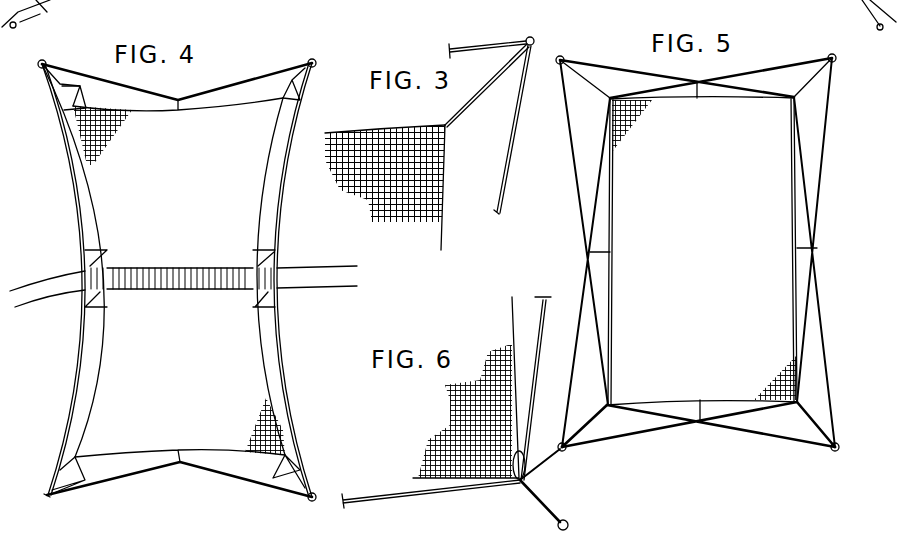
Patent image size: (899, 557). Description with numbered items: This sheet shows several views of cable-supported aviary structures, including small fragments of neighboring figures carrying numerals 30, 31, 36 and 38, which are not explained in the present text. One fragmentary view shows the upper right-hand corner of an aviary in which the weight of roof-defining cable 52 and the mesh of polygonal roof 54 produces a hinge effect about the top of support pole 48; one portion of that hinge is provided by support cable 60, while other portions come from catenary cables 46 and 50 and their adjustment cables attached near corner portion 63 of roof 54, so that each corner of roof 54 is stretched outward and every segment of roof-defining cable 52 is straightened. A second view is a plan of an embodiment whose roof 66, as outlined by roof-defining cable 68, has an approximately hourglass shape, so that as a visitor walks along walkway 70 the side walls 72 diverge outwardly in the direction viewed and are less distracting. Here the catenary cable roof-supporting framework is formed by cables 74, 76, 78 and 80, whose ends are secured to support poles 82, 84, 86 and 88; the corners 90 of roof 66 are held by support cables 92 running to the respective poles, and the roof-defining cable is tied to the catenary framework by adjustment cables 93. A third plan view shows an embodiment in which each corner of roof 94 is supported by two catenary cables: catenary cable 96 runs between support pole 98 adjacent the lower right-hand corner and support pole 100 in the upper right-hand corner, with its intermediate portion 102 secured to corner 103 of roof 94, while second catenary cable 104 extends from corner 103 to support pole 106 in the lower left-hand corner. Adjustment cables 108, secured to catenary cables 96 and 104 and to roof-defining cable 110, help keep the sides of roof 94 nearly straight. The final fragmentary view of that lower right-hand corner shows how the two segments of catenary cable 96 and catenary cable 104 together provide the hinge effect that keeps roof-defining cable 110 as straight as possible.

In FIG. 4, the frame member 30 is at (55, 5).
In FIG. 5, the frame member 31 is at (830, 5).
In FIG. 4, the pole tip 36 is at (33, 50).
In FIG. 5, the pole tip 38 is at (878, 29).
In FIG. 3, the catenary cable 46 is at (477, 48).
In FIG. 3, the support pole 48 is at (527, 37).
In FIG. 3, the catenary cable 50 is at (510, 133).
In FIG. 3, the roof-defining cable 52 is at (443, 217).
In FIG. 3, the polygonal roof 54 is at (375, 150).
In FIG. 3, the support cable 60 is at (466, 110).
In FIG. 3, the corner portion of roof 63 is at (440, 130).
In FIG. 4, the roof 66 is at (177, 190).
In FIG. 4, the roof-defining cable 68 is at (100, 370).
In FIG. 4, the walkway 70 is at (196, 290).
In FIG. 4, the side walls 72 is at (248, 201).
In FIG. 4, the catenary cable 74 is at (296, 400).
In FIG. 4, the catenary cable 76 is at (238, 478).
In FIG. 4, the catenary cable 78 is at (78, 340).
In FIG. 4, the catenary cable 80 is at (204, 96).
In FIG. 4, the support pole 82 is at (318, 491).
In FIG. 4, the support pole 84 is at (45, 492).
In FIG. 4, the support pole 86 is at (60, 60).
In FIG. 4, the support pole 88 is at (318, 58).
In FIG. 4, the corners of roof 90 is at (97, 120).
In FIG. 4, the support cables 92 is at (57, 95).
In FIG. 4, the adjustment cables 93 is at (277, 103).
In FIG. 6, the roof 94 is at (492, 396).
In FIG. 5, the roof 94 is at (692, 220).
In FIG. 6, the catenary cable 96 is at (533, 358).
In FIG. 5, the catenary cable 96 is at (820, 192).
In FIG. 6, the support pole 98 is at (567, 523).
In FIG. 5, the support pole 98 is at (840, 452).
In FIG. 5, the support pole 100 is at (838, 64).
In FIG. 6, the intermediate portion of cable 102 is at (523, 482).
In FIG. 5, the intermediate portion of cable 102 is at (798, 402).
In FIG. 6, the corner of roof 103 is at (530, 452).
In FIG. 5, the corner of roof 103 is at (780, 373).
In FIG. 6, the second catenary cable 104 is at (397, 500).
In FIG. 5, the second catenary cable 104 is at (653, 433).
In FIG. 5, the support pole 106 is at (572, 447).
In FIG. 5, the adjustment cables 108 is at (803, 248).
In FIG. 6, the roof-defining cable 110 is at (427, 468).
In FIG. 5, the roof-defining cable 110 is at (612, 193).